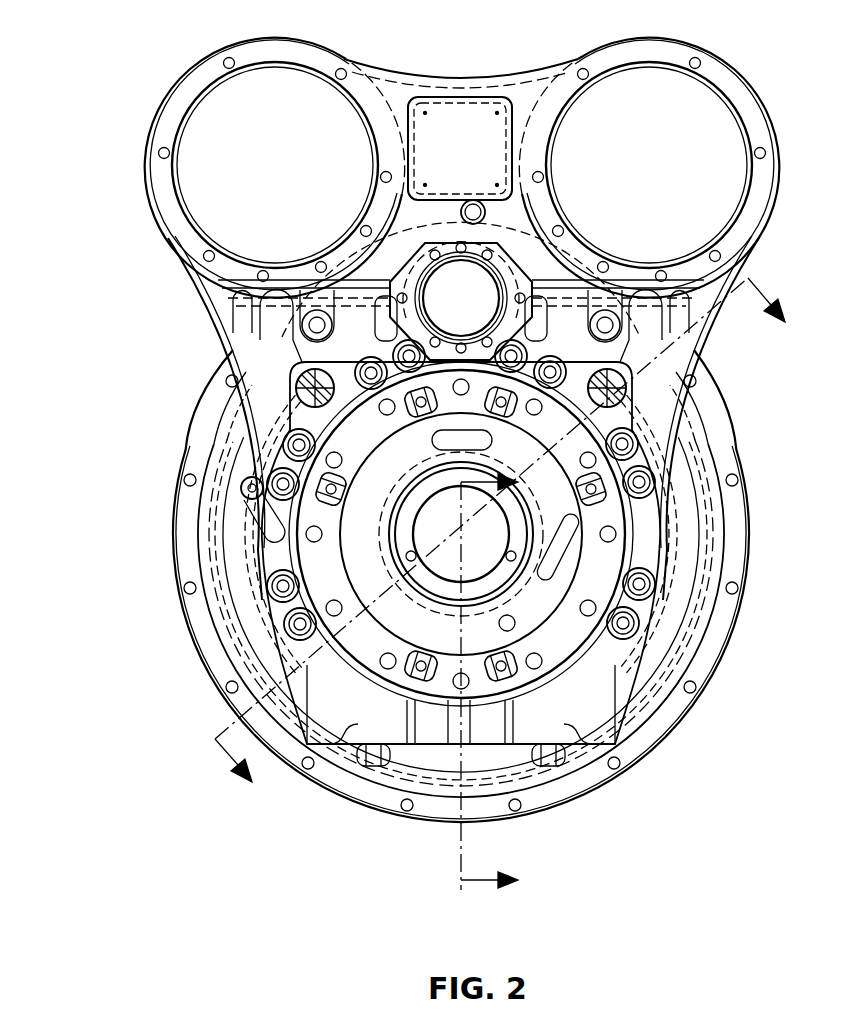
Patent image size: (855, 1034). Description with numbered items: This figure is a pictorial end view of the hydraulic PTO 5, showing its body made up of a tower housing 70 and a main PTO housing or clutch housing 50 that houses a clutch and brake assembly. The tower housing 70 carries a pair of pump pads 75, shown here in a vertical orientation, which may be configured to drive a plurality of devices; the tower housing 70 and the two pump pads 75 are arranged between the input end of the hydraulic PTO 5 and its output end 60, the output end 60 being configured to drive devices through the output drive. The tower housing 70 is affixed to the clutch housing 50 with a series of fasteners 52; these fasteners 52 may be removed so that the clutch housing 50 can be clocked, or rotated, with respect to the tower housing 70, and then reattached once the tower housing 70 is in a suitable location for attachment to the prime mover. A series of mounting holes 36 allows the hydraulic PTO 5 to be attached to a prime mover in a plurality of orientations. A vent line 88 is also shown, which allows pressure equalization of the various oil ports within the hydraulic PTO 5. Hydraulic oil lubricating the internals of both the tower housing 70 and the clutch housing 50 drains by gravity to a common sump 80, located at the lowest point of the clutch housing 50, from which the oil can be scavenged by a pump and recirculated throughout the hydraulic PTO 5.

The hydraulic PTO 5 is at (88, 349).
The mounting holes 36 is at (696, 691).
The clutch housing 50 is at (285, 540).
The fasteners 52 is at (640, 625).
The output end 60 is at (300, 565).
The tower housing 70 is at (493, 75).
The pump pads 75 is at (175, 117).
The sump 80 is at (343, 722).
The vent line 88 is at (243, 487).